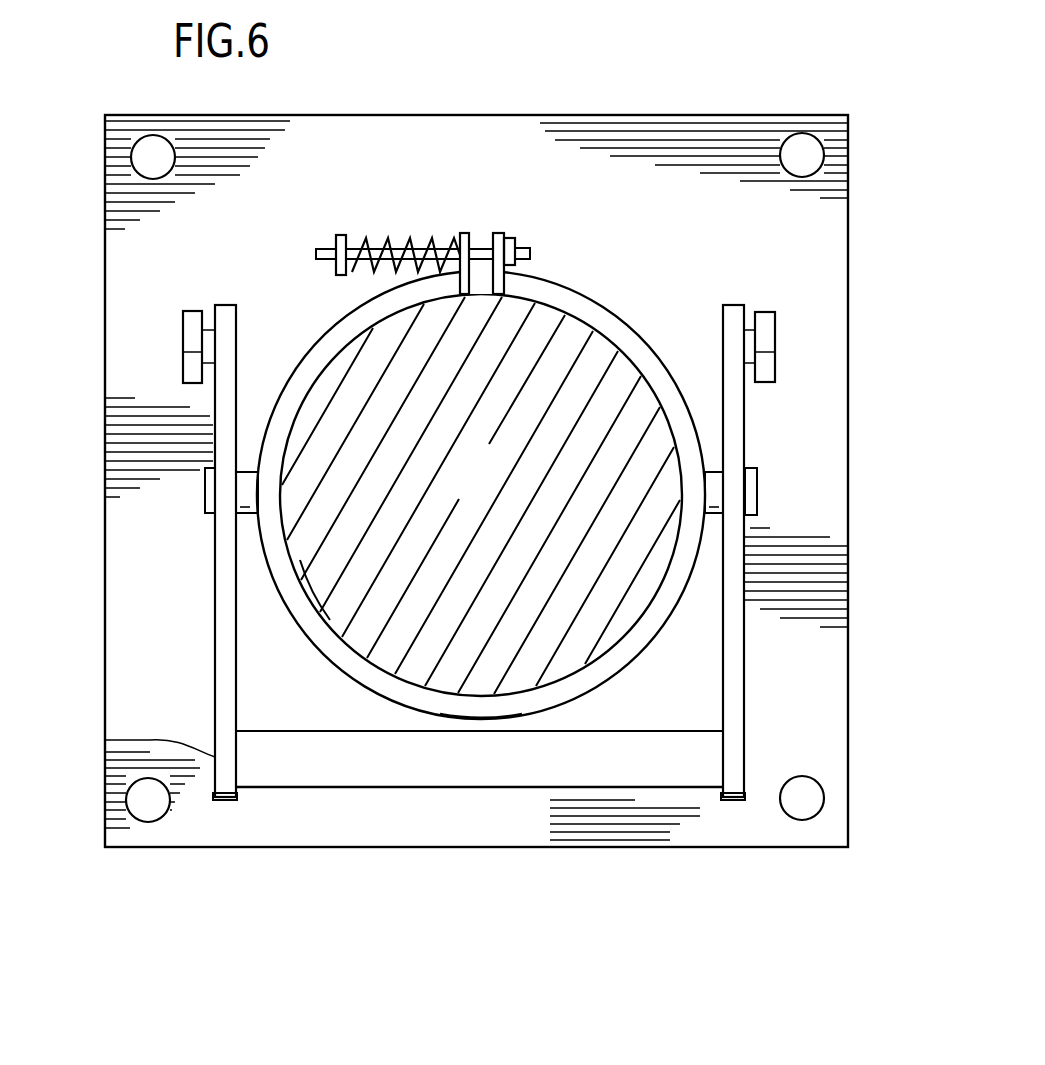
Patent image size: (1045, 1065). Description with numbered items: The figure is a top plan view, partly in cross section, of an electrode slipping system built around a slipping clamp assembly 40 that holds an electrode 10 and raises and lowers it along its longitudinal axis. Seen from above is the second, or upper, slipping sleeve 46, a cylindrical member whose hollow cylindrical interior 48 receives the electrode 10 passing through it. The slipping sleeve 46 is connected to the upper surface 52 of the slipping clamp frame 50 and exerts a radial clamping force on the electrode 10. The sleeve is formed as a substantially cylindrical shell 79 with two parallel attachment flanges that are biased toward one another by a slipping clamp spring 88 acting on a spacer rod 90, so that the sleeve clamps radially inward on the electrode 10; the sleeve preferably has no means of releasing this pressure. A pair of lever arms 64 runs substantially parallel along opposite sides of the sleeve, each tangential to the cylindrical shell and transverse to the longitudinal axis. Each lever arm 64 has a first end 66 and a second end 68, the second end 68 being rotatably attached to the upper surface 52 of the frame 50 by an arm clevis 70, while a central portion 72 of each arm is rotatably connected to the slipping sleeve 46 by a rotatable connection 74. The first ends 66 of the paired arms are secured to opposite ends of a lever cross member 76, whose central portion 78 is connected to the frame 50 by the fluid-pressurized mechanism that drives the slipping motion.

The electrode 10 is at (490, 490).
The slipping clamp assembly 40 is at (623, 105).
The second slipping sleeve 46 is at (502, 720).
The hollow cylindrical interior 48 is at (326, 598).
The slipping clamp frame 50 is at (833, 866).
The upper surface 52 is at (758, 827).
The lever arm 64 is at (110, 740).
The first end 66 is at (222, 800).
The second end 68 is at (228, 306).
The arm clevis 70 is at (190, 335).
The central portion 72 is at (218, 598).
The rotatable connection 74 is at (200, 498).
The lever cross member 76 is at (462, 775).
The central portion 78 is at (387, 778).
The cylindrical shell 79 is at (617, 318).
The slipping clamp spring 88 is at (506, 240).
The spacer rod 90 is at (318, 250).